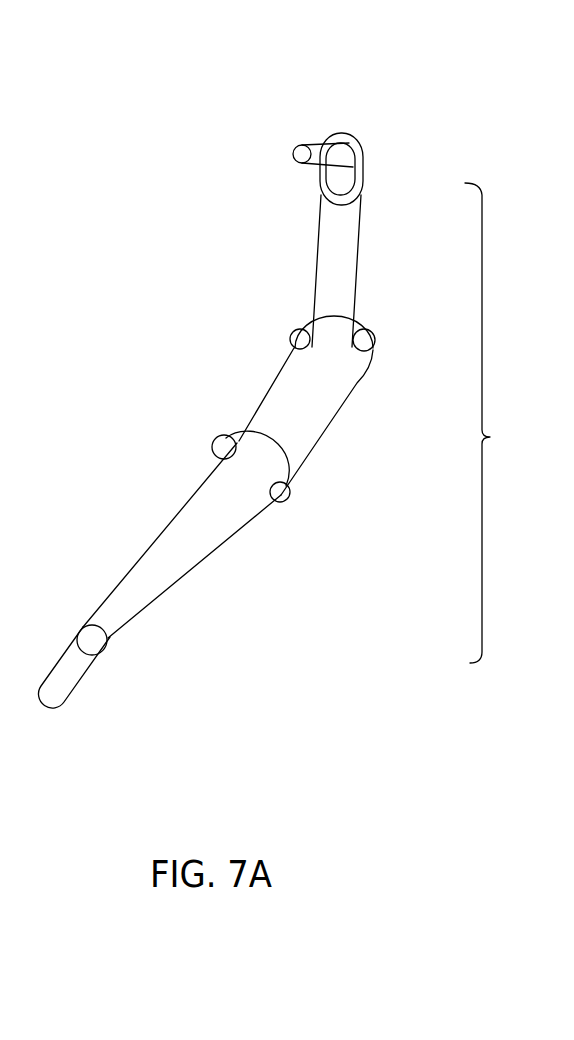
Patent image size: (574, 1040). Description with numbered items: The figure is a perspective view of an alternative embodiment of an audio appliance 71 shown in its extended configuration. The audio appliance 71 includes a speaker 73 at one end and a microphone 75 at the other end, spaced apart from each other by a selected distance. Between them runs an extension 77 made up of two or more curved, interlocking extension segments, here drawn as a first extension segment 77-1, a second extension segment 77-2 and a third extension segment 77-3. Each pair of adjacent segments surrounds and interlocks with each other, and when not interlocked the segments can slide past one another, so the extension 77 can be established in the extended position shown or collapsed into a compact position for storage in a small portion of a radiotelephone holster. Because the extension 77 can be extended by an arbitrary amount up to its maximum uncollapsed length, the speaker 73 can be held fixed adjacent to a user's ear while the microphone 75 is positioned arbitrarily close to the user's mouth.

The audio appliance 71 is at (437, 80).
The speaker 73 is at (362, 160).
The microphone 75 is at (65, 680).
The extension 77 is at (496, 423).
The first extension segment 77-1 is at (315, 245).
The second extension segment 77-2 is at (268, 393).
The third extension segment 77-3 is at (177, 513).